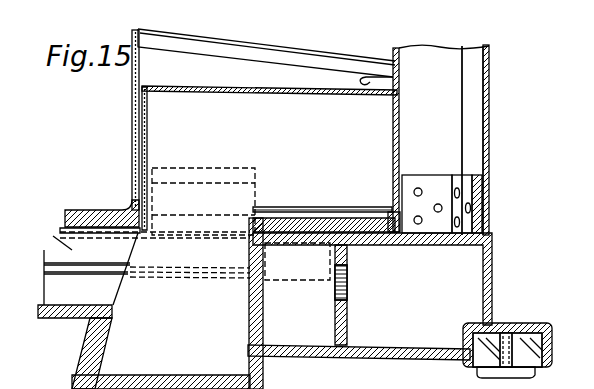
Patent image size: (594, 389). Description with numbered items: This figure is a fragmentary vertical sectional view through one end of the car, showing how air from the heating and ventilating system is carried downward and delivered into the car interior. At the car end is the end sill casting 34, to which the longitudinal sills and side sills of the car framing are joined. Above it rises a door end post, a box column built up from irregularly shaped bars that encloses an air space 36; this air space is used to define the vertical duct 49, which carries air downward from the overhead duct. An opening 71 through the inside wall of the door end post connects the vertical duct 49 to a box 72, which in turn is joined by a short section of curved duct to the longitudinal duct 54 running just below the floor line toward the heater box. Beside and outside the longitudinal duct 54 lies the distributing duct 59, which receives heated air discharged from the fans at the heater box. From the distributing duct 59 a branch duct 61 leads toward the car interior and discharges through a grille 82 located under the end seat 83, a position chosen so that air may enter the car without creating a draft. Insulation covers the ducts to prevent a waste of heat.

The grilles 82 is at (132, 127).
The end seats 83 is at (308, 54).
The openings 71 is at (400, 117).
The vertical duct 49 is at (490, 88).
The air space 36 is at (442, 143).
The branch ducts 61 is at (240, 170).
The distributing ducts 59 is at (44, 248).
The longitudinal ducts 54 is at (161, 353).
The boxes 72 is at (264, 375).
The end sill casting 34 is at (490, 282).